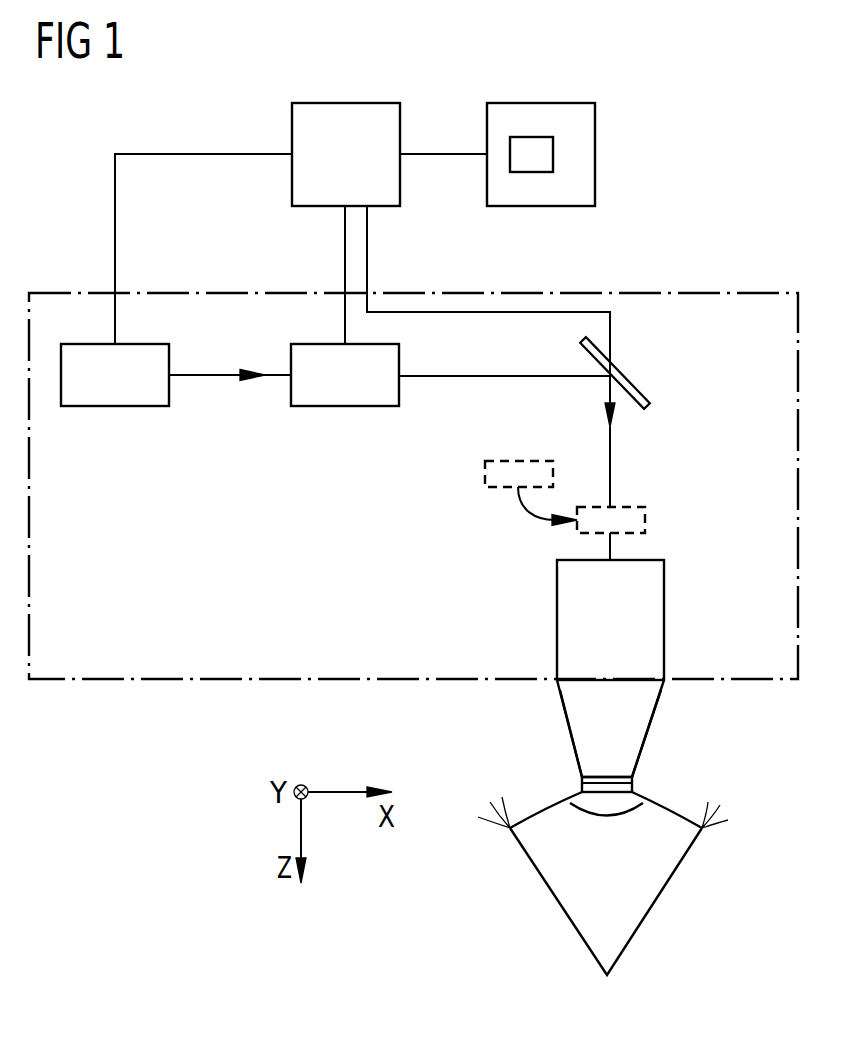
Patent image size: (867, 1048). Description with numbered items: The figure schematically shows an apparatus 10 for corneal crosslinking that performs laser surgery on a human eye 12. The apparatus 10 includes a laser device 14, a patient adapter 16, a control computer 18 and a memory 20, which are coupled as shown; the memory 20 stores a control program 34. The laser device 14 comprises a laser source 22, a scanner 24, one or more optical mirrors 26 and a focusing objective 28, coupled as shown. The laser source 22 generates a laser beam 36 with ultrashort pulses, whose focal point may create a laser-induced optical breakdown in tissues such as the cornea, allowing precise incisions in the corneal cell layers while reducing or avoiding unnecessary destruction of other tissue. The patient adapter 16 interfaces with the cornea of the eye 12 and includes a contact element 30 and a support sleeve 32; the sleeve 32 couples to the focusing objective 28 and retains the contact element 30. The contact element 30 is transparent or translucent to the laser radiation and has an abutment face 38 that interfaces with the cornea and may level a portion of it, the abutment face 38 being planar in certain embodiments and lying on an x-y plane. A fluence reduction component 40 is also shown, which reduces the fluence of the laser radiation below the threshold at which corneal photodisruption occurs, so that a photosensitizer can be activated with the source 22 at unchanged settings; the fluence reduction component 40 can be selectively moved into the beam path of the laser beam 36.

The apparatus 10 is at (197, 754).
The human eye 12 is at (662, 893).
The laser device 14 is at (658, 292).
The patient adapter 16 is at (652, 730).
The control computer 18 is at (345, 102).
The memory 20 is at (540, 102).
The laser source 22 is at (116, 410).
The scanner 24 is at (345, 410).
The optical mirror 26 is at (627, 372).
The focusing objective 28 is at (664, 620).
The contact element 30 is at (630, 787).
The support sleeve 32 is at (567, 730).
The control program 34 is at (532, 172).
The laser beam 36 is at (218, 377).
The abutment face 38 is at (603, 795).
The fluence reduction component 40 is at (518, 460).